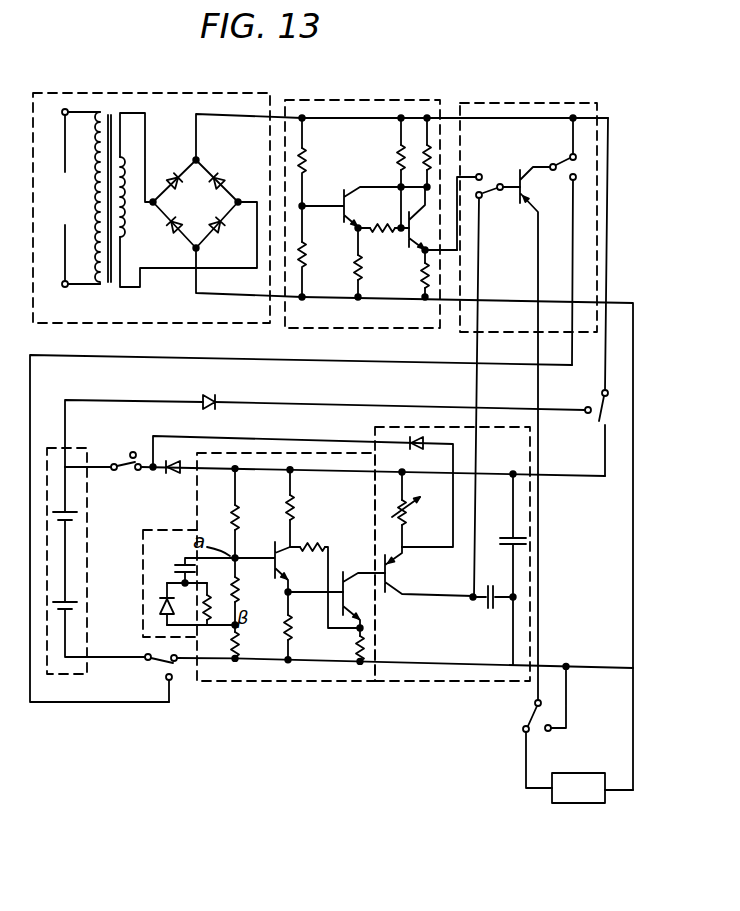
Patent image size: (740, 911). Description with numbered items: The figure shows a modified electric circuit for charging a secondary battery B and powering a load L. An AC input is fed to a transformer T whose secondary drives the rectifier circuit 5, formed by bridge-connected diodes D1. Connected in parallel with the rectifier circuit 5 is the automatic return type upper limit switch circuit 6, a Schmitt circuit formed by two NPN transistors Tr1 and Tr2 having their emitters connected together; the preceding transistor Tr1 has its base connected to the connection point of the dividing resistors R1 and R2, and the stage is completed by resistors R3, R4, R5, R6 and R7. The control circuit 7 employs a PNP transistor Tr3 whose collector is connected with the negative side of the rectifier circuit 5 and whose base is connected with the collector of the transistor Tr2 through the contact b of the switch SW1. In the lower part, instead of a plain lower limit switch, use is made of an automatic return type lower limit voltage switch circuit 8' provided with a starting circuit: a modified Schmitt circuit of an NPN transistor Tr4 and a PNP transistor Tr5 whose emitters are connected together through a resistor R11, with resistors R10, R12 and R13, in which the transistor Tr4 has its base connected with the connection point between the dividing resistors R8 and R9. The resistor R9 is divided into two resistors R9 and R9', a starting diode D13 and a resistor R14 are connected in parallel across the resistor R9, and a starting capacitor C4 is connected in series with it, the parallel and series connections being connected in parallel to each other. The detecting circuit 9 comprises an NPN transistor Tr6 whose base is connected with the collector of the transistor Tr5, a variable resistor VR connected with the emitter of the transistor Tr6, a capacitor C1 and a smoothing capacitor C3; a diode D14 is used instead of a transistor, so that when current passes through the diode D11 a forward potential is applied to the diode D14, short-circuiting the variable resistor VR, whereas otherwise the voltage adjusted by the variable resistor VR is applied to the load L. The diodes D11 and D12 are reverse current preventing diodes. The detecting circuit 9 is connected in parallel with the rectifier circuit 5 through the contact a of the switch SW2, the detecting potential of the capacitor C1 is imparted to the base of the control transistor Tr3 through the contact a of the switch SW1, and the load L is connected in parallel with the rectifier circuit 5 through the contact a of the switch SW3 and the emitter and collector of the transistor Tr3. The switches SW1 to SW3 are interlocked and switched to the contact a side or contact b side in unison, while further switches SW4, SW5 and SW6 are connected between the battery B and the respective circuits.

The rectifier circuit 5 is at (203, 93).
The automatic return type upper limit switch circuit 6 is at (376, 100).
The control circuit 7 is at (537, 103).
The transformer T is at (109, 105).
The bridge-connected diodes D1 is at (205, 172).
The dividing resistor R1 is at (319, 162).
The dividing resistor R2 is at (318, 251).
The resistor R3 is at (375, 262).
The resistor R4 is at (383, 218).
The resistor R5 is at (399, 150).
The resistor R6 is at (436, 153).
The resistor R7 is at (422, 277).
The dividing resistor R8 is at (251, 513).
The dividing resistor R9 is at (251, 591).
The resistor R9' is at (254, 645).
The resistor R10 is at (314, 508).
The resistor R11 is at (325, 573).
The resistor R12 is at (311, 626).
The resistor R13 is at (366, 647).
The resistor R14 is at (209, 621).
The NPN transistor Tr1 is at (371, 176).
The NPN transistor Tr2 is at (441, 241).
The PNP transistor Tr3 is at (533, 185).
The NPN transistor Tr4 is at (283, 562).
The PNP transistor Tr5 is at (353, 598).
The NPN transistor Tr6 is at (390, 568).
The switch SW1 is at (492, 183).
The switch SW2 is at (552, 165).
The switch SW3 is at (533, 713).
The switch SW4 is at (157, 664).
The switch SW5 is at (602, 407).
The switch SW6 is at (118, 462).
The reverse current preventing diode D11 is at (176, 460).
The reverse current preventing diode D12 is at (325, 419).
The starting diode D13 is at (159, 603).
The diode D14 is at (413, 435).
The capacitor C1 is at (493, 587).
The smoothing capacitor C3 is at (506, 569).
The starting capacitor C4 is at (196, 565).
The variable resistor VR is at (417, 509).
The battery B is at (68, 553).
The load L is at (588, 783).
The automatic return type lower limit voltage switch circuit provided with a startin 8' is at (286, 589).
The detecting circuit 9 is at (417, 683).